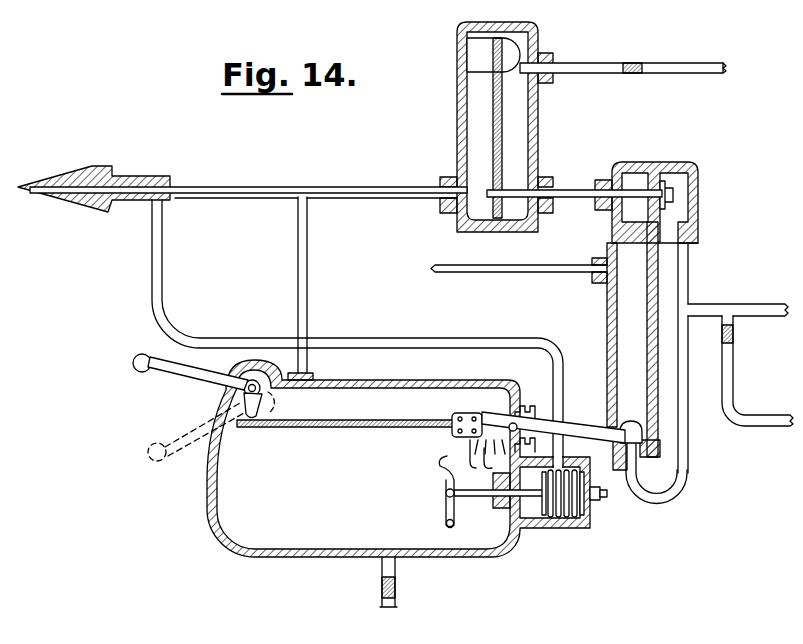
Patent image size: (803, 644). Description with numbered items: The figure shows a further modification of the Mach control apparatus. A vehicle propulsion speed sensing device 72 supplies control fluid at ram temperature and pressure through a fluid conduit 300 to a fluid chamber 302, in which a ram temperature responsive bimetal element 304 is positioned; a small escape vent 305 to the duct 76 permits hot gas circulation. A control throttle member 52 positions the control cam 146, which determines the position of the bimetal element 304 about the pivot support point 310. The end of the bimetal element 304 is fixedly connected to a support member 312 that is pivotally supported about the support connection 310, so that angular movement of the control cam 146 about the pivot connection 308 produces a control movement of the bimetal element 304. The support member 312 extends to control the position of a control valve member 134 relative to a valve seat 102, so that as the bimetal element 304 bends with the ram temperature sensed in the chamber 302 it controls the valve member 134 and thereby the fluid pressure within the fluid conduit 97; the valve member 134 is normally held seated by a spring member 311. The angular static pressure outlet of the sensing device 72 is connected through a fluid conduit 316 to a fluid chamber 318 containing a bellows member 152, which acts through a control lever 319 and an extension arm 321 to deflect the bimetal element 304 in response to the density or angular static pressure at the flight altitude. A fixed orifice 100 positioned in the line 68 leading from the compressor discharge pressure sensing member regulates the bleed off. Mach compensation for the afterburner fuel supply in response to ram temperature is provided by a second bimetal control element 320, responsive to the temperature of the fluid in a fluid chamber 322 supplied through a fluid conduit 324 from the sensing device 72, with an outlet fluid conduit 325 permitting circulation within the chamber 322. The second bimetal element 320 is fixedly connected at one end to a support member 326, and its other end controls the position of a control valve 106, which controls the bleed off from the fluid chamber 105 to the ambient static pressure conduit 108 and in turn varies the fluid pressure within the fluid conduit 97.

The vehicle propulsion speed sensing device 72 is at (106, 168).
The fluid conduit 300 is at (222, 188).
The fluid conduit 316 is at (162, 266).
The pivot connection 308 is at (252, 386).
The control throttle member 52 is at (133, 363).
The control cam 146 is at (240, 405).
The ram temperature responsive bimetal element 304 is at (363, 430).
The fluid chamber 302 is at (237, 503).
The escape vent 305 is at (383, 571).
The ambient static pressure sensing device 76 is at (495, 271).
The support member 326 is at (478, 52).
The fluid chamber 322 is at (467, 113).
The fluid conduit 324 is at (342, 192).
The second bimetal control element 320 is at (503, 134).
The outlet fluid conduit 325 is at (676, 68).
The control valve 106 is at (683, 195).
The ambient static pressure conduit 108 is at (630, 229).
The fluid chamber 105 is at (685, 270).
The fluid conduit 97 is at (757, 309).
The fixed orifice 100 is at (737, 333).
The fluid conduit 68 is at (775, 424).
The control valve member 134 is at (634, 425).
The valve seat 102 is at (648, 463).
The pivot support point 310 is at (517, 410).
The support member 312 is at (483, 412).
The extension arm 321 is at (470, 450).
The spring member 311 is at (450, 478).
The control lever 319 is at (446, 478).
The bellows member 152 is at (572, 527).
The fluid chamber 318 is at (528, 508).